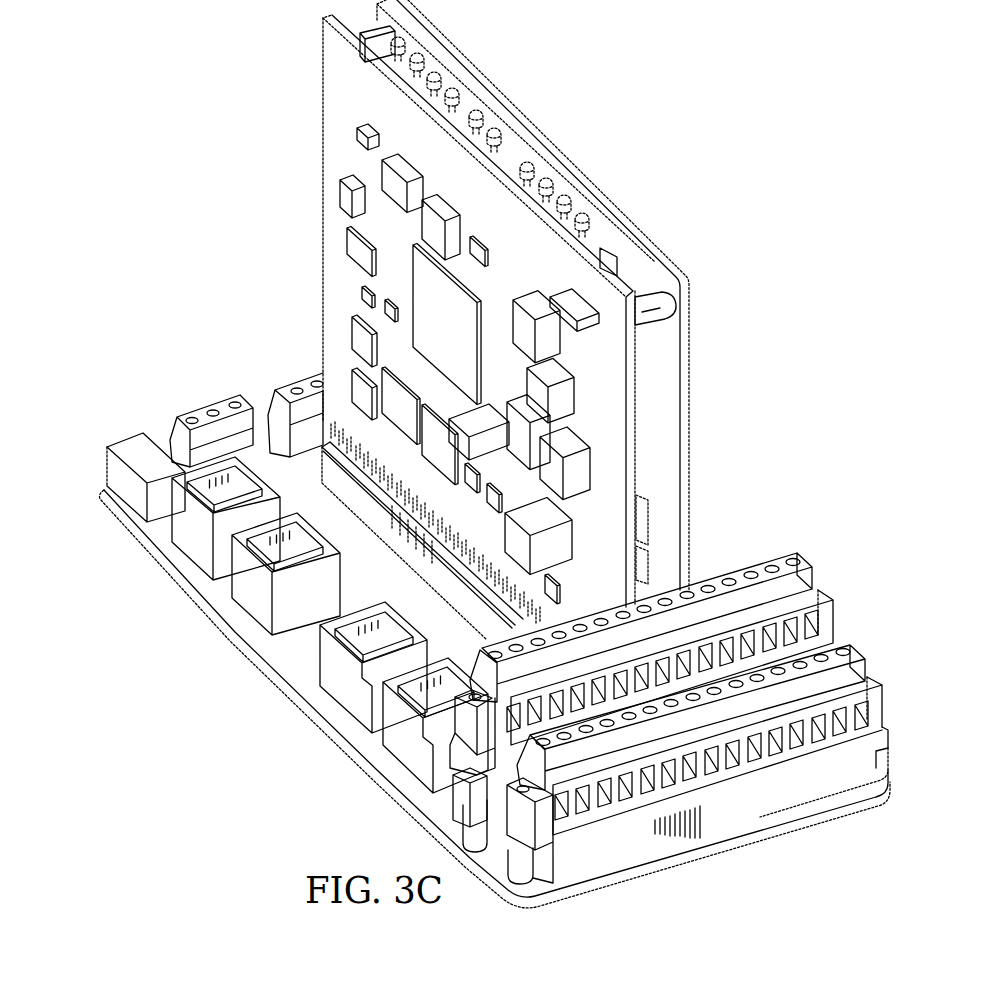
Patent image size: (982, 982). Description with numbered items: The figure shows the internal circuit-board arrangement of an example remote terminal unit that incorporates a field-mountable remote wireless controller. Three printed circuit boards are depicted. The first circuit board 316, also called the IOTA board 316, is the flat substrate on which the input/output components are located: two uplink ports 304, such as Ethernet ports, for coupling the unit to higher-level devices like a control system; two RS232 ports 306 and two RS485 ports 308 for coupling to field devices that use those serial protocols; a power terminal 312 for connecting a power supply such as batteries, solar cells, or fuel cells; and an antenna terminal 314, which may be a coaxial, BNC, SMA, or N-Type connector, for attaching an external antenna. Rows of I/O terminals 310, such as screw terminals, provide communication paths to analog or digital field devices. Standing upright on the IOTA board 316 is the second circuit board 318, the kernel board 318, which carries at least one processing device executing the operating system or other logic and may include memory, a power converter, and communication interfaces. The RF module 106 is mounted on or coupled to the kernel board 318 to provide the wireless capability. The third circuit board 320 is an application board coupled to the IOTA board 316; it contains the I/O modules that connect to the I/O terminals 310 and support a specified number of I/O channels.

The RF module 106 is at (463, 310).
The uplink port 304 is at (350, 698).
The RS232 port 306 is at (192, 551).
The RS485 port 308 is at (280, 403).
The I/O terminals 310 is at (717, 812).
The power terminal 312 is at (172, 427).
The antenna terminal 314 is at (105, 468).
The first circuit board 316 is at (290, 662).
The second circuit board 318 is at (335, 275).
The third circuit board 320 is at (668, 392).